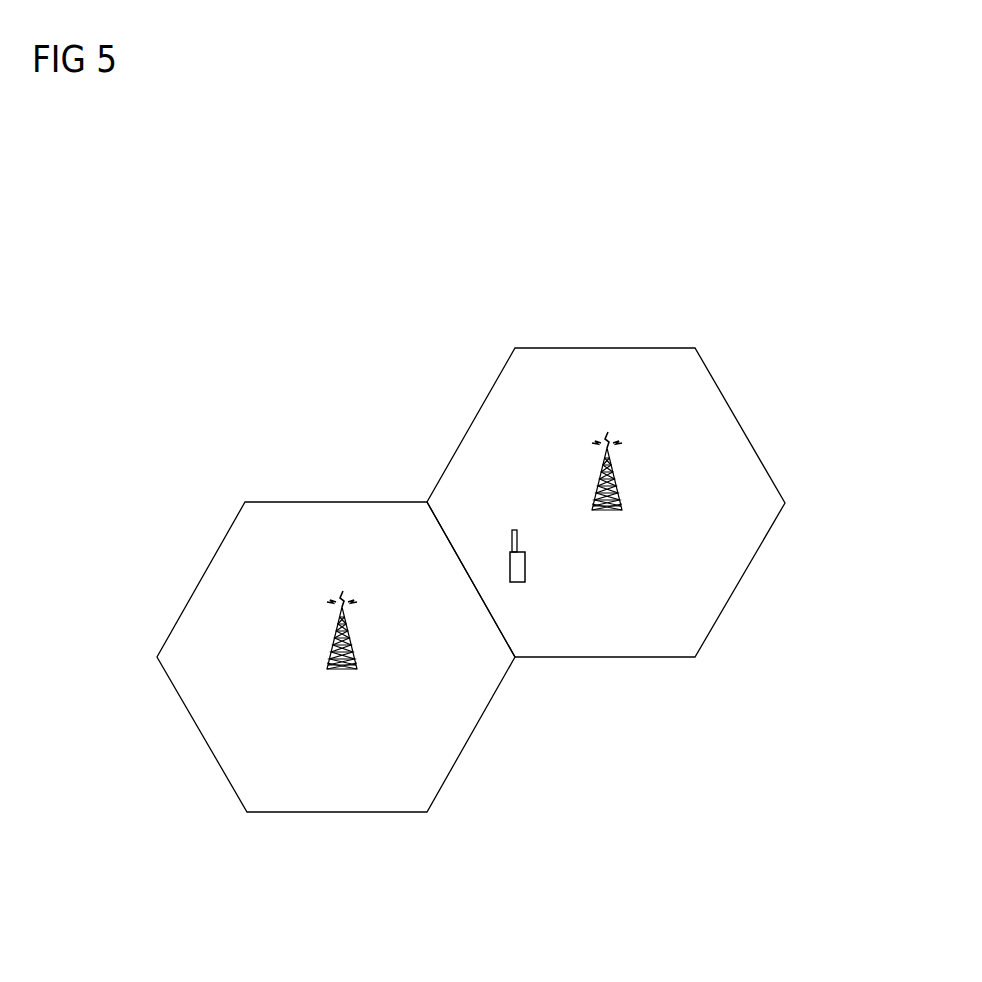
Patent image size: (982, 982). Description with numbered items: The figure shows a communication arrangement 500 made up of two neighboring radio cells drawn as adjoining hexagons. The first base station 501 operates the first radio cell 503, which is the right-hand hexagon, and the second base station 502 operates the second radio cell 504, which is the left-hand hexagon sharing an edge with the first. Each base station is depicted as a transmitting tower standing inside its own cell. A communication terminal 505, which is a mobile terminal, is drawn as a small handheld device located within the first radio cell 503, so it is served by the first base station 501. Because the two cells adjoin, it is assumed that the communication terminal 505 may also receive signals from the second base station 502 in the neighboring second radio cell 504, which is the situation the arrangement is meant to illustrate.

The communication arrangement 500 is at (810, 77).
The first base station 501 is at (618, 480).
The second base station 502 is at (353, 635).
The first radio cell 503 is at (722, 395).
The second radio cell 504 is at (225, 537).
The communication terminal 505 is at (525, 558).